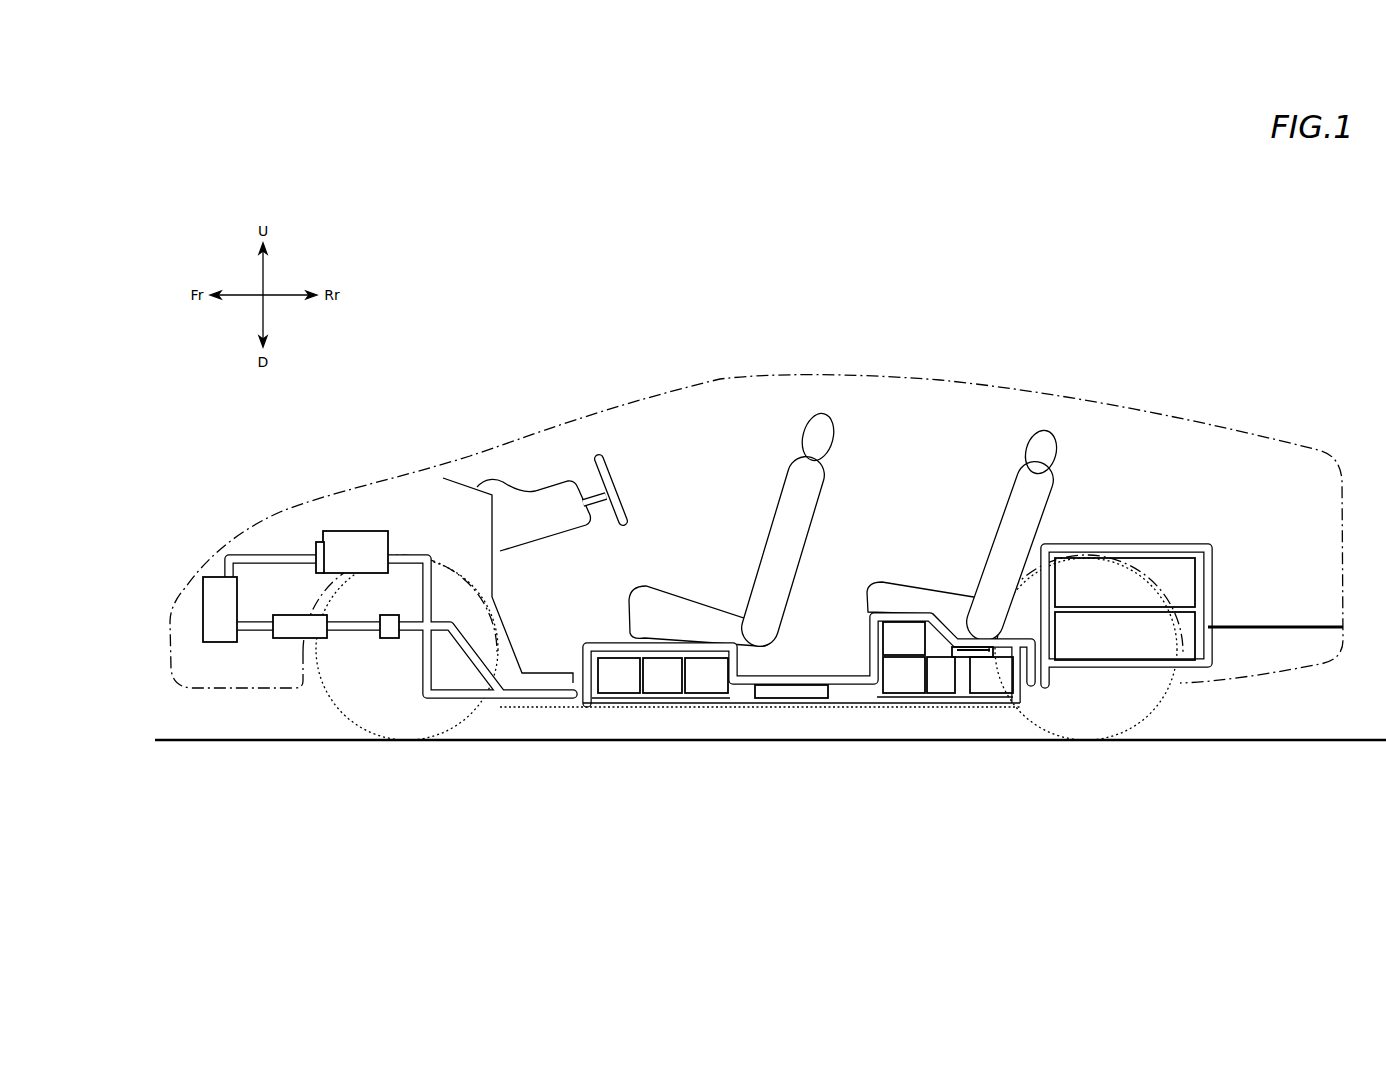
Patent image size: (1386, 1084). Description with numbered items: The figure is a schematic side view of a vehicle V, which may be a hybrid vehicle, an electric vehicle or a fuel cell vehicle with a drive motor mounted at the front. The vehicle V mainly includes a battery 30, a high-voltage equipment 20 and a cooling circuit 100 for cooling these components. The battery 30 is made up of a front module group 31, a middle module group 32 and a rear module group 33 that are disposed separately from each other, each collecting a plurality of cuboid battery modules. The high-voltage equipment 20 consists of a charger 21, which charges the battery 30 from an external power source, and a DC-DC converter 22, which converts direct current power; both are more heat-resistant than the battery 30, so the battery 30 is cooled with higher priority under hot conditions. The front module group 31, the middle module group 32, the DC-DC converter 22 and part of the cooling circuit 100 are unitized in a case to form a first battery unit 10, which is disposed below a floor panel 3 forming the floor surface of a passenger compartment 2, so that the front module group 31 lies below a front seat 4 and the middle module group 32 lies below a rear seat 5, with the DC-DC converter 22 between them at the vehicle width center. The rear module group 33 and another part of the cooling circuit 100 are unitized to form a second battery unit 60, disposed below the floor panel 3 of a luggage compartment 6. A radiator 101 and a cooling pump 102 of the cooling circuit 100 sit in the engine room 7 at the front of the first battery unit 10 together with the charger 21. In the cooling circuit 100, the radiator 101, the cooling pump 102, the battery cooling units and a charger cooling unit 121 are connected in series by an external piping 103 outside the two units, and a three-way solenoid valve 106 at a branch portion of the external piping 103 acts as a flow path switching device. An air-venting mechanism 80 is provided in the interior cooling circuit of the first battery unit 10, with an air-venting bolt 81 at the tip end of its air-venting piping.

The vehicle V is at (1031, 320).
The passenger compartment 2 is at (711, 459).
The floor panel 3 is at (596, 641).
The front seat 4 is at (678, 596).
The rear seat 5 is at (890, 594).
The luggage compartment 6 is at (1194, 478).
The engine room 7 is at (280, 592).
The first battery unit 10 is at (652, 731).
The high-voltage equipment 20 is at (528, 617).
The charger 21 is at (358, 530).
The DC-DC converter 22 is at (791, 694).
The battery 30 is at (885, 681).
The front module group 31 is at (607, 698).
The middle module group 32 is at (903, 695).
The rear module group 33 is at (1090, 666).
The second battery unit 60 is at (1210, 653).
The air-venting mechanism 80 is at (957, 695).
The air-venting bolt 81 is at (972, 645).
The cooling circuit 100 is at (261, 554).
The radiator 101 is at (202, 605).
The cooling pump 102 is at (292, 640).
The external piping 103 is at (437, 700).
The three-way solenoid valve 106 is at (389, 640).
The charger cooling unit 121 is at (313, 549).